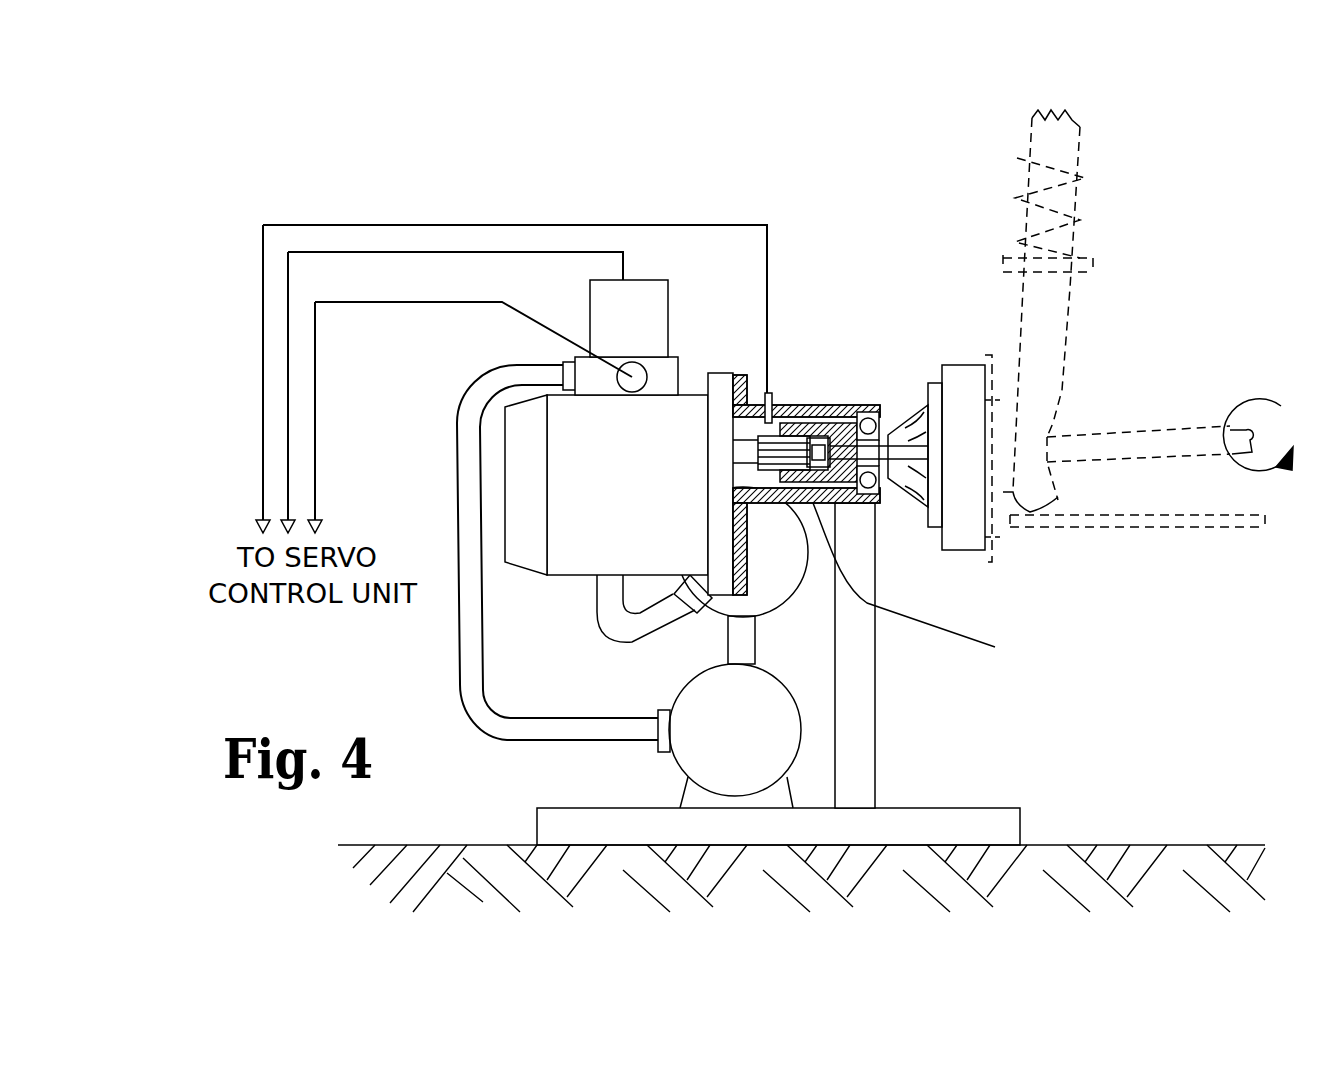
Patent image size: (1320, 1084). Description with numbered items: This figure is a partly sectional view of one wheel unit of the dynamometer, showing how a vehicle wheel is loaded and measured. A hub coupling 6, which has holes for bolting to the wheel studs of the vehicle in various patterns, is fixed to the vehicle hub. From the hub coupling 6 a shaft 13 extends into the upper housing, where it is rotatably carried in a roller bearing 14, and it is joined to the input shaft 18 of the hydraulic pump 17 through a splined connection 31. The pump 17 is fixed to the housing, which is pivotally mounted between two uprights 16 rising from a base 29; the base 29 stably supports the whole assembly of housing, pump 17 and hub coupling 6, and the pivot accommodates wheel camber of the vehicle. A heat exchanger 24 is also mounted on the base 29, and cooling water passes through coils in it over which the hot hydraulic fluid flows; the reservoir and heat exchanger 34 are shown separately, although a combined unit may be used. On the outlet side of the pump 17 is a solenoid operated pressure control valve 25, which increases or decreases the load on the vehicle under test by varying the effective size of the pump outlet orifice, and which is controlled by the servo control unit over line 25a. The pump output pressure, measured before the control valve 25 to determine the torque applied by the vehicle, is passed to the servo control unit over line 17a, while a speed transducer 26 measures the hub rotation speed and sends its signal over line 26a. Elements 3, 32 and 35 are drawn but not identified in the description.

The pedal crank assembly 3 is at (967, 378).
The hub coupling 6 is at (908, 423).
The shaft 13 is at (877, 455).
The roller bearing 14 is at (878, 492).
The uprights 16 is at (866, 703).
The hydraulic pump 17 is at (588, 538).
The line 17a is at (315, 413).
The input shaft 18 is at (743, 453).
The heat exchanger 24 is at (706, 713).
The solenoid operated pressure control valve 25 is at (680, 372).
The line 25a is at (487, 252).
The speed transducer 26 is at (773, 398).
The line 26a is at (655, 222).
The base 29 is at (963, 823).
The splined connection 31 is at (920, 587).
The accumulator 32 is at (777, 588).
The heat exchanger 34 is at (745, 636).
The return pipe 35 is at (610, 612).